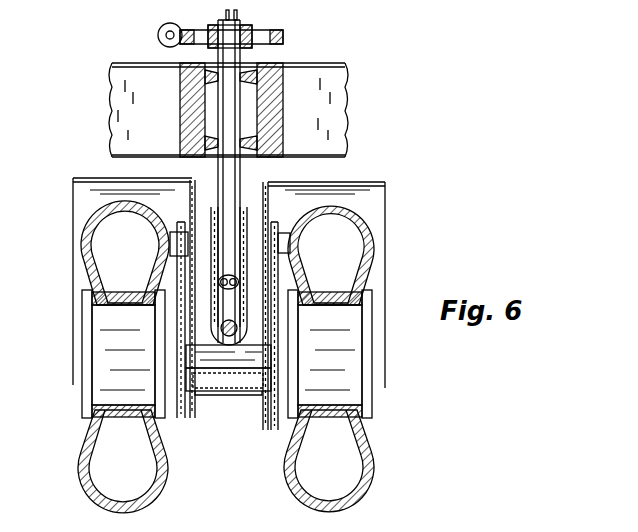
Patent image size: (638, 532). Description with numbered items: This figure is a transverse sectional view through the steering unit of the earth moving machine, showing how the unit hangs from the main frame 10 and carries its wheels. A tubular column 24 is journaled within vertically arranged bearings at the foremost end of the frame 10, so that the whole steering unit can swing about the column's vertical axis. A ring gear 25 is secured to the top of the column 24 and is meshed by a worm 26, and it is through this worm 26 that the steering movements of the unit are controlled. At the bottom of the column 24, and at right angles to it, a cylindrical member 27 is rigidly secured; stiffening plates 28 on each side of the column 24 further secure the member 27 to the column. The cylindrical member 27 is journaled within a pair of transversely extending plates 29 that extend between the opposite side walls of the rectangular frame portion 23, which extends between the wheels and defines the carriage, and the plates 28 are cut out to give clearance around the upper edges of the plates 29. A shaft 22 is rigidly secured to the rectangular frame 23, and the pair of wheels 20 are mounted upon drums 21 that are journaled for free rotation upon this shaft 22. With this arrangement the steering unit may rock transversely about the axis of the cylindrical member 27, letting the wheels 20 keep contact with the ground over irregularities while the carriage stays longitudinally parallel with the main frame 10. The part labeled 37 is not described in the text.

The frame 10 is at (343, 120).
The wheels 20 is at (286, 480).
The drums 21 is at (100, 350).
The shaft 22 is at (226, 360).
The rectangular frame portion 23 is at (243, 375).
The tubular column 24 is at (226, 170).
The ring gear 25 is at (285, 42).
The worm 26 is at (158, 35).
The cylindrical member 27 is at (238, 333).
The stiffening plates 28 is at (256, 216).
The transversely extending plates 29 is at (206, 383).
The uprights 37 is at (180, 333).